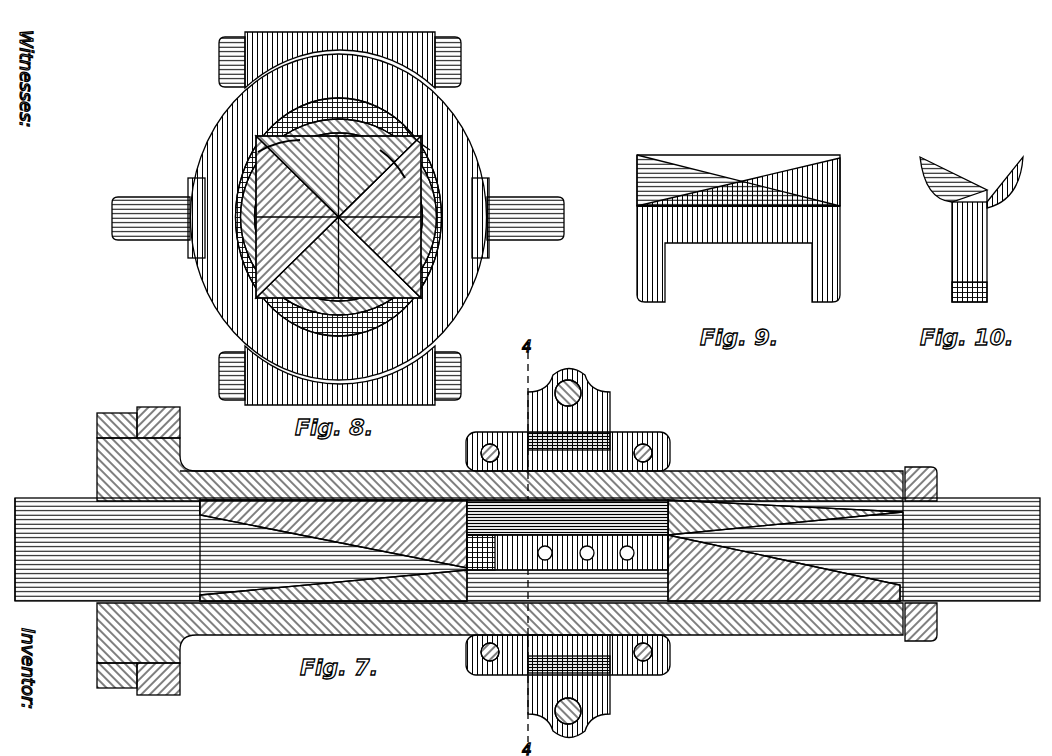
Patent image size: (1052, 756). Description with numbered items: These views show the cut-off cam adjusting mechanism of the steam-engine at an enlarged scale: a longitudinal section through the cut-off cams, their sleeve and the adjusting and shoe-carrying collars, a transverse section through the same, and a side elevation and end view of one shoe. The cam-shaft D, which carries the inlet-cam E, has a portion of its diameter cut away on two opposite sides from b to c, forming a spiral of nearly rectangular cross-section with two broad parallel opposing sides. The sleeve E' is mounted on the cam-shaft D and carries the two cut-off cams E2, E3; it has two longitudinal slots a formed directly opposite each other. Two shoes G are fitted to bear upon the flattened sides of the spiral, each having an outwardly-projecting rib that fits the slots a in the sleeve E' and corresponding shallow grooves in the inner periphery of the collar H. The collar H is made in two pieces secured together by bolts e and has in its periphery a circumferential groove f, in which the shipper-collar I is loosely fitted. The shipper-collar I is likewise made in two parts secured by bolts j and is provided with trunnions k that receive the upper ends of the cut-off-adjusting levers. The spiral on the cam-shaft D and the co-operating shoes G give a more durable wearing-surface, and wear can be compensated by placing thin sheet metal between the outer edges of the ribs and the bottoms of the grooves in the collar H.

In FIG. 8, the cam-shaft D is at (339, 217).
In FIG. 7, the cam-shaft D is at (527, 549).
In FIG. 7, the spiral portion start b is at (193, 522).
In FIG. 7, the spiral portion end c is at (900, 534).
In FIG. 7, the inlet-cam E is at (517, 550).
In FIG. 8, the sleeve E' is at (324, 143).
In FIG. 7, the sleeve E' is at (290, 462).
In FIG. 7, the cut-off cam E2 is at (117, 539).
In FIG. 7, the cut-off cam E3 is at (158, 541).
In FIG. 8, the shoe G is at (240, 177).
In FIG. 9, the shoe G is at (738, 180).
In FIG. 10, the shoe G is at (971, 181).
In FIG. 7, the shoe G is at (551, 550).
In FIG. 9, the longitudinal slot a is at (738, 254).
In FIG. 10, the longitudinal slot a is at (969, 252).
In FIG. 7, the longitudinal slot a is at (567, 552).
In FIG. 8, the collar H is at (437, 306).
In FIG. 7, the collar H is at (568, 553).
In FIG. 8, the shipper-collar I is at (339, 218).
In FIG. 7, the shipper-collar I is at (569, 553).
In FIG. 8, the bolt j is at (345, 218).
In FIG. 7, the bolt j is at (578, 385).
In FIG. 7, the bolt e is at (481, 453).
In FIG. 8, the trunnion k is at (147, 206).
In FIG. 8, the circumferential groove f is at (417, 130).